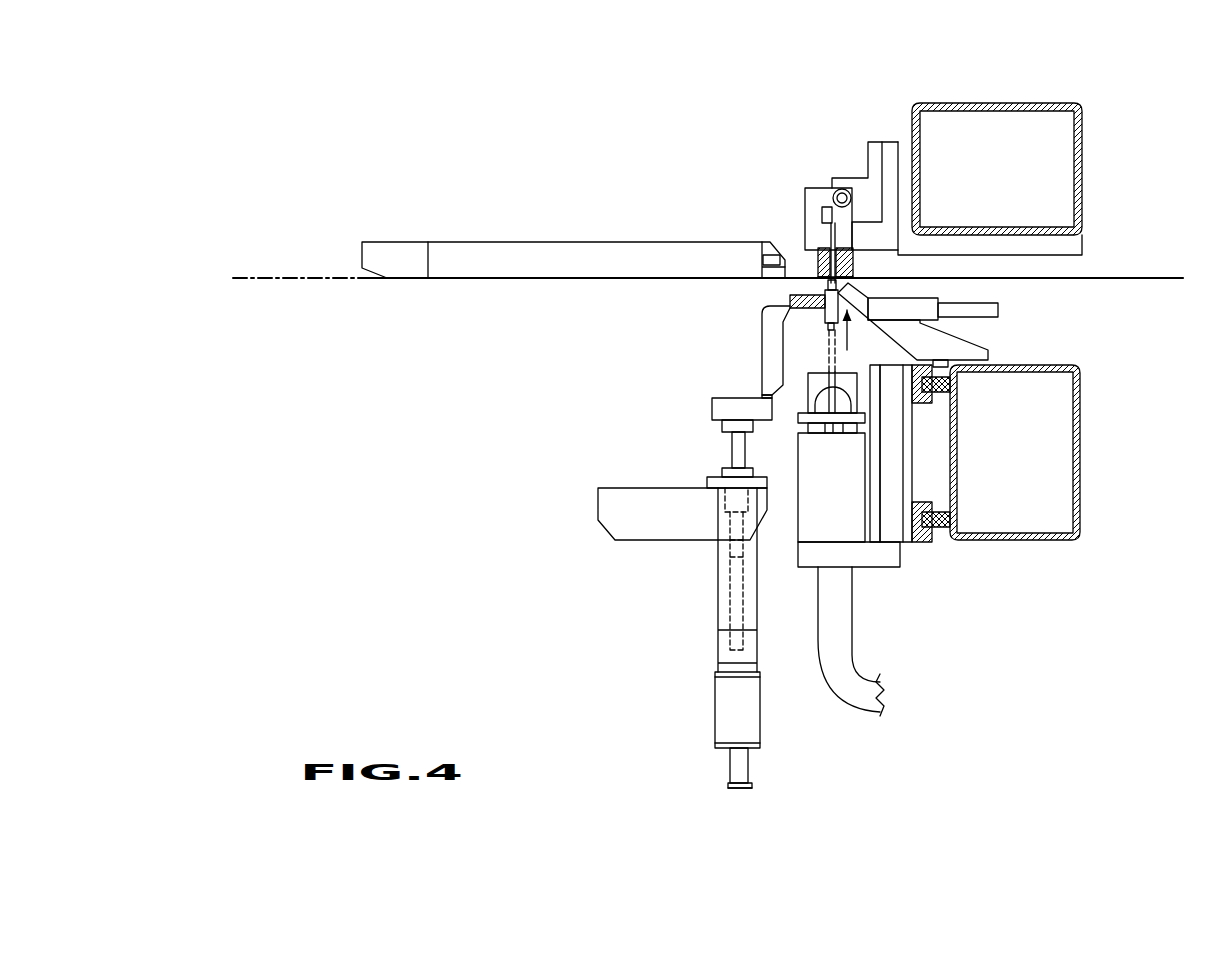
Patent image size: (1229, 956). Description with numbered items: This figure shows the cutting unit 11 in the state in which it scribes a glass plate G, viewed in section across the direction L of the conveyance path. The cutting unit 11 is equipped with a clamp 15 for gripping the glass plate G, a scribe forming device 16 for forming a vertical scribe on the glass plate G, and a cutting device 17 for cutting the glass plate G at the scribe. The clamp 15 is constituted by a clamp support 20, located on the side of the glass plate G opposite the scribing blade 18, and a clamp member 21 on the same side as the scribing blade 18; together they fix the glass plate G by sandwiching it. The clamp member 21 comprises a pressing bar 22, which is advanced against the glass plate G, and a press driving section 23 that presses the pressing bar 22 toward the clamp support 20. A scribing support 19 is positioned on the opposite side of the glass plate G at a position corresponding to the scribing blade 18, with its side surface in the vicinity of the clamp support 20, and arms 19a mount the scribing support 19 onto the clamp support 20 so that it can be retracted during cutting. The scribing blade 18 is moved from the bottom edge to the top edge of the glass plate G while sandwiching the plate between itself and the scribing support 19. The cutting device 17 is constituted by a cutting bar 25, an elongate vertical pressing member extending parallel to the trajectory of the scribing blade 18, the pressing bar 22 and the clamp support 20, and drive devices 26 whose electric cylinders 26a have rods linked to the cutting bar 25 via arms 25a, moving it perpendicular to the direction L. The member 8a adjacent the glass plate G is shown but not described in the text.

The glass plate G is at (1152, 278).
The direction of the conveyance path L is at (308, 277).
The stage / support table 8a is at (443, 242).
The cutting unit 11 is at (334, 583).
The clamp 15 is at (1048, 547).
The scribe forming device 16 is at (855, 714).
The cutting device 17 is at (737, 793).
The scribing blade 18 is at (821, 275).
The scribing support 19 is at (806, 248).
The arms 19a is at (817, 257).
The clamp support 20 is at (855, 223).
The clamp member 21 is at (950, 326).
The pressing bar 22 is at (857, 277).
The press driving section 23 is at (1007, 305).
The cutting bar 25 is at (822, 282).
The arms 25a is at (762, 343).
The drive devices 26 is at (588, 443).
The electric cylinders 26a is at (718, 578).